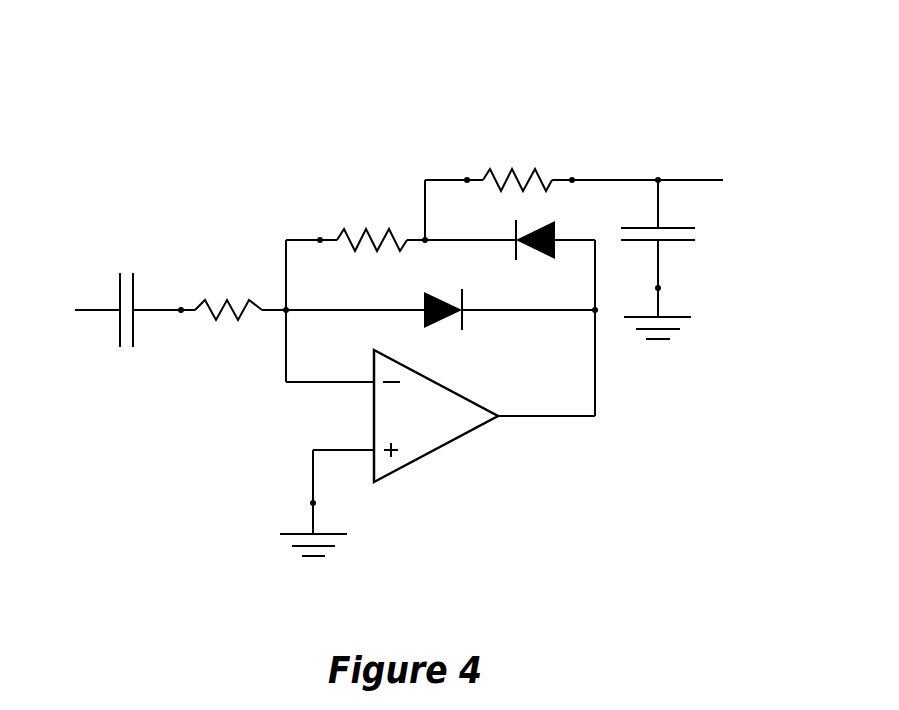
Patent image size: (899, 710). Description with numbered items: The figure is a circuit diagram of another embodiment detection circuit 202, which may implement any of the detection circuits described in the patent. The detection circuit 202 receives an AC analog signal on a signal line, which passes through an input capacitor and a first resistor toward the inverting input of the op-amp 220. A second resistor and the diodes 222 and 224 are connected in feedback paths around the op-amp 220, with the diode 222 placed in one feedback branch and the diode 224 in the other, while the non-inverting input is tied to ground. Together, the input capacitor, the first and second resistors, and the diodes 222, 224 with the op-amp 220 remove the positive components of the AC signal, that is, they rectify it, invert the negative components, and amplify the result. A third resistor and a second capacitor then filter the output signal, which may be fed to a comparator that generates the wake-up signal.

The detection circuit 202 is at (160, 108).
The op-amp 220 is at (442, 450).
The diode 222 is at (465, 328).
The diode 224 is at (538, 253).